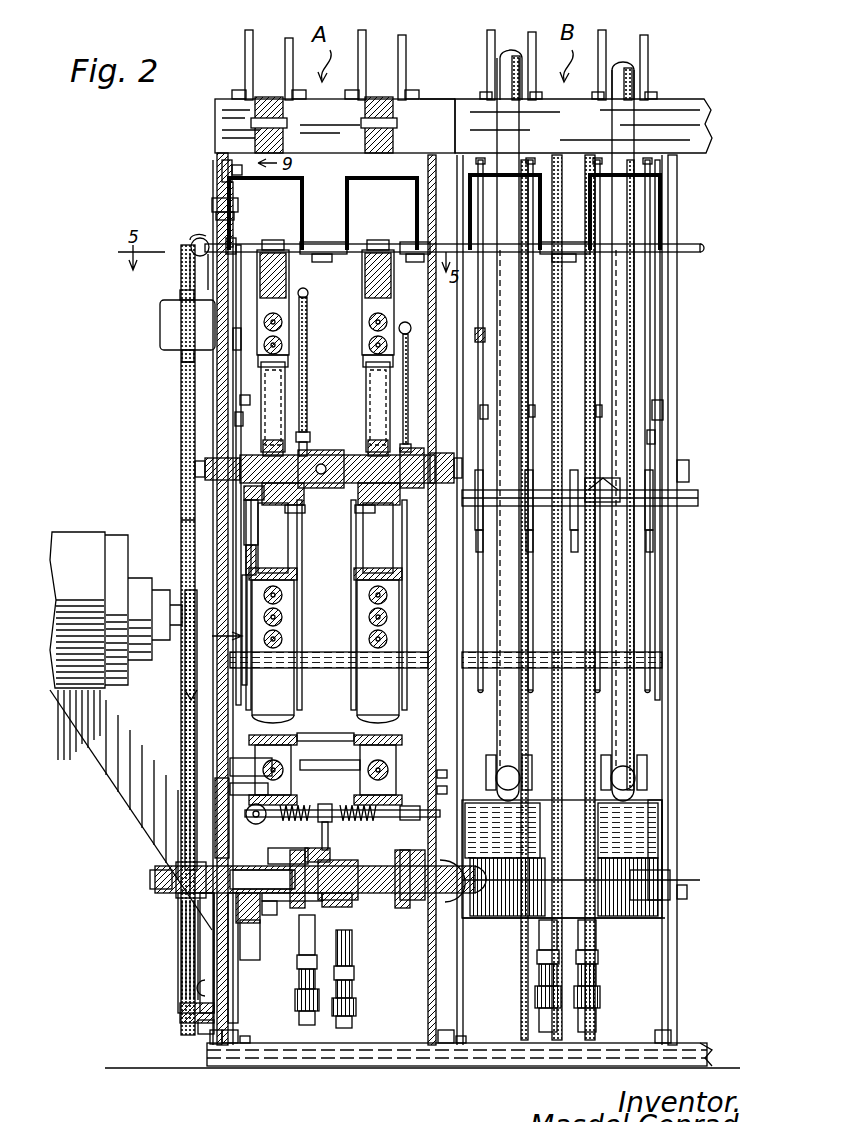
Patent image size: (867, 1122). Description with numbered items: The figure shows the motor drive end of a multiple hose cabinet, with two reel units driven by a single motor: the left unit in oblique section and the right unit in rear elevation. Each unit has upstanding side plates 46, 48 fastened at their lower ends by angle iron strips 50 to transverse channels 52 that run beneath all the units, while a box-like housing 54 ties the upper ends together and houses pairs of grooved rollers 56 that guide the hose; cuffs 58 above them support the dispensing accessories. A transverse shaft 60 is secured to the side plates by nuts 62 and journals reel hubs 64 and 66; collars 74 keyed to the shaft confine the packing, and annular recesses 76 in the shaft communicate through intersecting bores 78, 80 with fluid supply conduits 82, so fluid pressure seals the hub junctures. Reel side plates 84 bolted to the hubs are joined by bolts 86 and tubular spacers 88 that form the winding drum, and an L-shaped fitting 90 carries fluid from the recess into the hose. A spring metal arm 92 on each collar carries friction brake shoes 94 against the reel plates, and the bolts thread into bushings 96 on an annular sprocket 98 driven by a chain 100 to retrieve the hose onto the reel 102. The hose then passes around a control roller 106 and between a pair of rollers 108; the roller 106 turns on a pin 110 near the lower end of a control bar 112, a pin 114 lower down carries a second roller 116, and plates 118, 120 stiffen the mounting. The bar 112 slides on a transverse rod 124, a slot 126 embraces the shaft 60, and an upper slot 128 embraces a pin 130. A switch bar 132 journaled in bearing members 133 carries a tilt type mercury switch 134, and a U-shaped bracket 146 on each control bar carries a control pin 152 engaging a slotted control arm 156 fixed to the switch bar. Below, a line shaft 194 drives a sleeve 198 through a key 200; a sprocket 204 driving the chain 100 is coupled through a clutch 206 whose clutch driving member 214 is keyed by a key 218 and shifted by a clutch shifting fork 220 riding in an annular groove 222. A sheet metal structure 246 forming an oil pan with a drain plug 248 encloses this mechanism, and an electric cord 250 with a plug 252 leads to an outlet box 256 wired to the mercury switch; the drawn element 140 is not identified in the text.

The side plate 46 is at (217, 690).
The side plate 48 is at (677, 446).
The angle iron strip 50 is at (215, 1040).
The channel 52 is at (338, 1066).
The box-like housing 54 is at (580, 132).
The grooved roller 56 is at (365, 134).
The cuff 58 is at (405, 72).
The shaft 60 is at (320, 456).
The nut 62 is at (205, 468).
The reel hub 64 is at (296, 513).
The reel hub 66 is at (320, 488).
The collar 74 is at (414, 450).
The annular recess 76 is at (283, 445).
The bore 78 is at (244, 492).
The bore 80 is at (290, 505).
The fluid supply conduit 82 is at (307, 360).
The reel side plate 84 is at (290, 298).
The bolt 86 is at (369, 598).
The tubular spacer 88 is at (297, 574).
The L-shaped fitting 90 is at (287, 374).
The spring metal arm 92 is at (235, 419).
The friction brake shoe 94 is at (240, 398).
The bushing 96 is at (242, 556).
The annular sprocket 98 is at (236, 382).
The chain 100 is at (233, 342).
The hose reel 102 is at (354, 654).
The control roller 106 is at (380, 735).
The roller 108 is at (540, 540).
The pin 110 is at (252, 766).
The control bar 112 is at (660, 420).
The pin 114 is at (225, 806).
The second roller 116 is at (362, 774).
The plate 118 is at (248, 790).
The plate 120 is at (291, 762).
The rod 124 is at (434, 804).
The slot 126 is at (244, 504).
The slot 128 is at (222, 218).
The pin 130 is at (222, 192).
The switch bar 132 is at (700, 250).
The bearing member 133 is at (232, 242).
The tilt type mercury switch 134 is at (195, 240).
The motor 140 is at (94, 592).
The U-shaped bracket 146 is at (347, 178).
The control pin 152 is at (324, 242).
The control arm 156 is at (402, 244).
The line shaft 194 is at (185, 880).
The sleeve 198 is at (286, 908).
The key 200 is at (326, 862).
The sprocket 204 is at (238, 902).
The clutch 206 is at (268, 908).
The clutch driving member 214 is at (320, 841).
The key 218 is at (306, 862).
The clutch shifting fork 220 is at (312, 828).
The annular groove 222 is at (280, 915).
The sheet metal structure 246 is at (440, 905).
The drain plug 248 is at (355, 958).
The electric cord 250 is at (200, 982).
The plug 252 is at (198, 1026).
The outlet box 256 is at (160, 320).